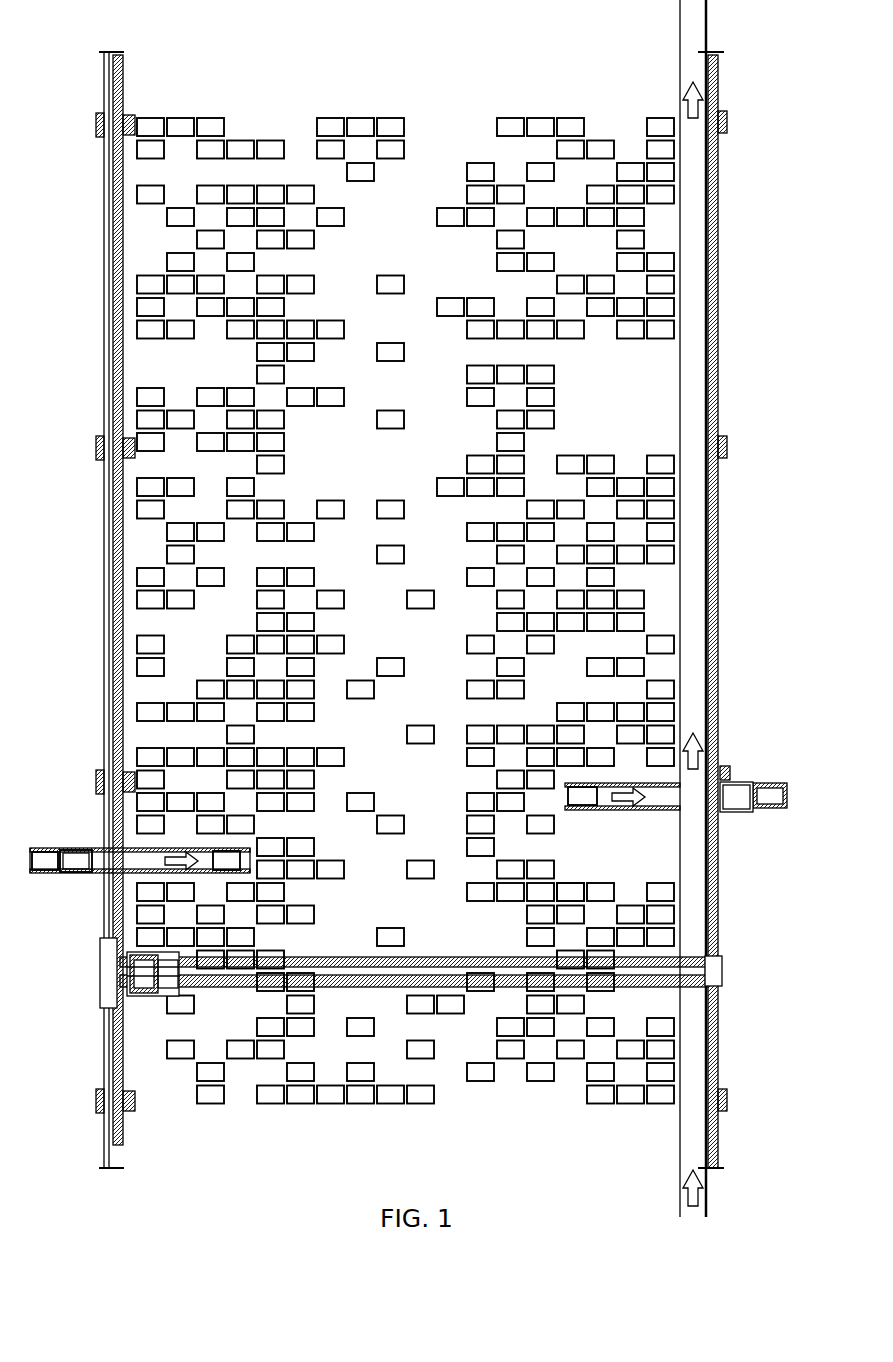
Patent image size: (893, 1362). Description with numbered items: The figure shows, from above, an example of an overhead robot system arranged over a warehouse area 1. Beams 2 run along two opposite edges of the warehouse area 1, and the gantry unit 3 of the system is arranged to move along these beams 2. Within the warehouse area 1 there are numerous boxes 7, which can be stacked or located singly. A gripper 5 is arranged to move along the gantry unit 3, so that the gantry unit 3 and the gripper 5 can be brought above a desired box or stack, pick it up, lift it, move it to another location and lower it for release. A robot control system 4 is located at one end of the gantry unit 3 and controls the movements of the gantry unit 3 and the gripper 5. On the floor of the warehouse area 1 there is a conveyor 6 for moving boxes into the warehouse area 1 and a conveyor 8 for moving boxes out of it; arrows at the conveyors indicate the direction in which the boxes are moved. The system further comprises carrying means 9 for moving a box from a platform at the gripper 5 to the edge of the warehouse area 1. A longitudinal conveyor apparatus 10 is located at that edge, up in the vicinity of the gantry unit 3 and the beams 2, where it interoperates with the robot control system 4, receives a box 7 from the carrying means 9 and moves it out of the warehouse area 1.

The warehouse area 1 is at (399, 477).
The beams 2 is at (107, 211).
The gantry unit 3 is at (483, 956).
The robot control system 4 is at (108, 975).
The gripper 5 is at (152, 937).
The conveyor 6 is at (100, 848).
The boxes 7 is at (428, 610).
The conveyor 8 is at (737, 793).
The carrying means 9 is at (152, 991).
The longitudinal conveyor apparatus 10 is at (697, 545).